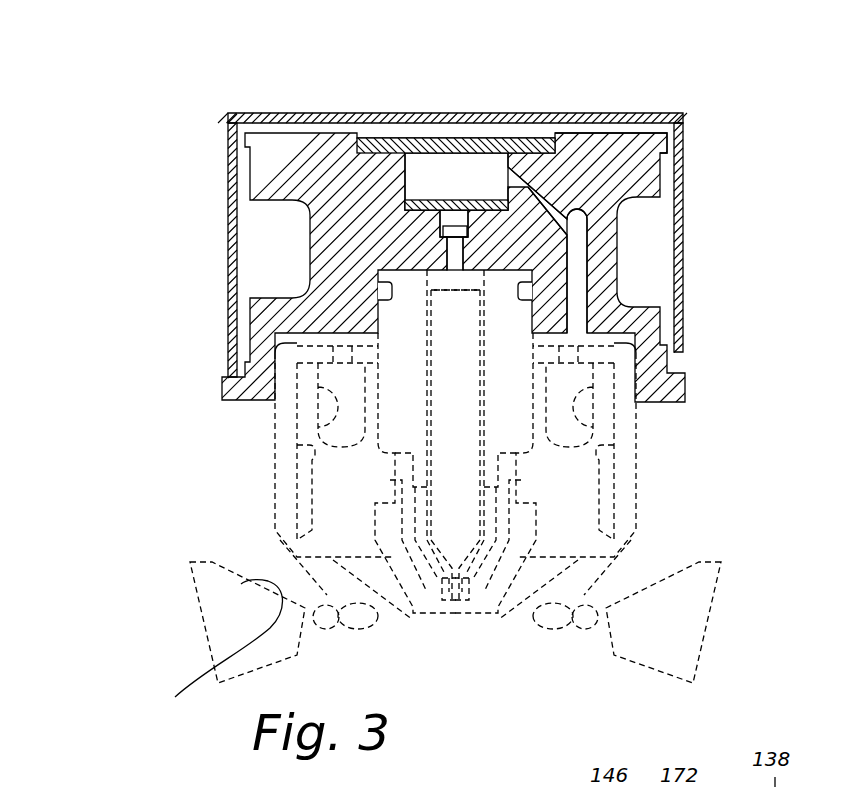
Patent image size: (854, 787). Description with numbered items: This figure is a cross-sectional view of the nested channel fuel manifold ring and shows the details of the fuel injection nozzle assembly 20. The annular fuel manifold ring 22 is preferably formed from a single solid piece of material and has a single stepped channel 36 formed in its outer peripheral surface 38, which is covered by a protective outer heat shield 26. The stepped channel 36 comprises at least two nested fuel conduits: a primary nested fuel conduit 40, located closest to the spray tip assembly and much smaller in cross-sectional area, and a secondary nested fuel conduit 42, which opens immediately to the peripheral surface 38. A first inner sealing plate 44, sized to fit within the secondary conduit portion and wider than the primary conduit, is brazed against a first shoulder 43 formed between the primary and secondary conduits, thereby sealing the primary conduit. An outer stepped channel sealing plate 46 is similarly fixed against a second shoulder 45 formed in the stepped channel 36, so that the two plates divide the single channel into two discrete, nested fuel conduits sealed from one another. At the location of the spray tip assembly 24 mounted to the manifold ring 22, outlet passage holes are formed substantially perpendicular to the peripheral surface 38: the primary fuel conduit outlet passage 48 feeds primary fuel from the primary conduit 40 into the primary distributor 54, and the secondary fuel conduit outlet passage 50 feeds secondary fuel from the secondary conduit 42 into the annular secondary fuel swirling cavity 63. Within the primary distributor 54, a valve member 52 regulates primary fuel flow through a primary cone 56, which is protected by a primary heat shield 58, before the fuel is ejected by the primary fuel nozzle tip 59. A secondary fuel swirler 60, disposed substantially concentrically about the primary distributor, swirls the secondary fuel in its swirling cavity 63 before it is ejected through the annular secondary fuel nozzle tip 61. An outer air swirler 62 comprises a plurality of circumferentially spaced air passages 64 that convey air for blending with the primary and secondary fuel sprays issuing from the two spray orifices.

The fuel injection nozzle assembly 20 is at (207, 100).
The annular fuel manifold ring 22 is at (614, 136).
The spray tip assembly 24 is at (236, 479).
The protective outer heat shield 26 is at (228, 278).
The stepped channel 36 is at (387, 117).
The outer peripheral surface 38 is at (645, 125).
The primary nested fuel conduit 40 is at (483, 232).
The secondary nested fuel conduit 42 is at (480, 150).
The first shoulder 43 is at (508, 188).
The first inner sealing plate 44 is at (485, 186).
The second shoulder 45 is at (545, 143).
The outer stepped channel sealing plate 46 is at (522, 128).
The primary fuel conduit outlet passage 48 is at (460, 253).
The secondary fuel conduit outlet passage 50 is at (577, 292).
The valve member 52 is at (499, 403).
The primary distributor 54 is at (510, 430).
The primary cone 56 is at (430, 557).
The primary heat shield 58 is at (480, 578).
The primary fuel nozzle tip 59 is at (455, 583).
The secondary fuel swirler 60 is at (568, 517).
The annular secondary fuel nozzle tip 61 is at (455, 598).
The outer air swirler 62 is at (158, 632).
The annular secondary fuel swirling cavity 63 is at (318, 432).
The air passages 64 is at (175, 697).